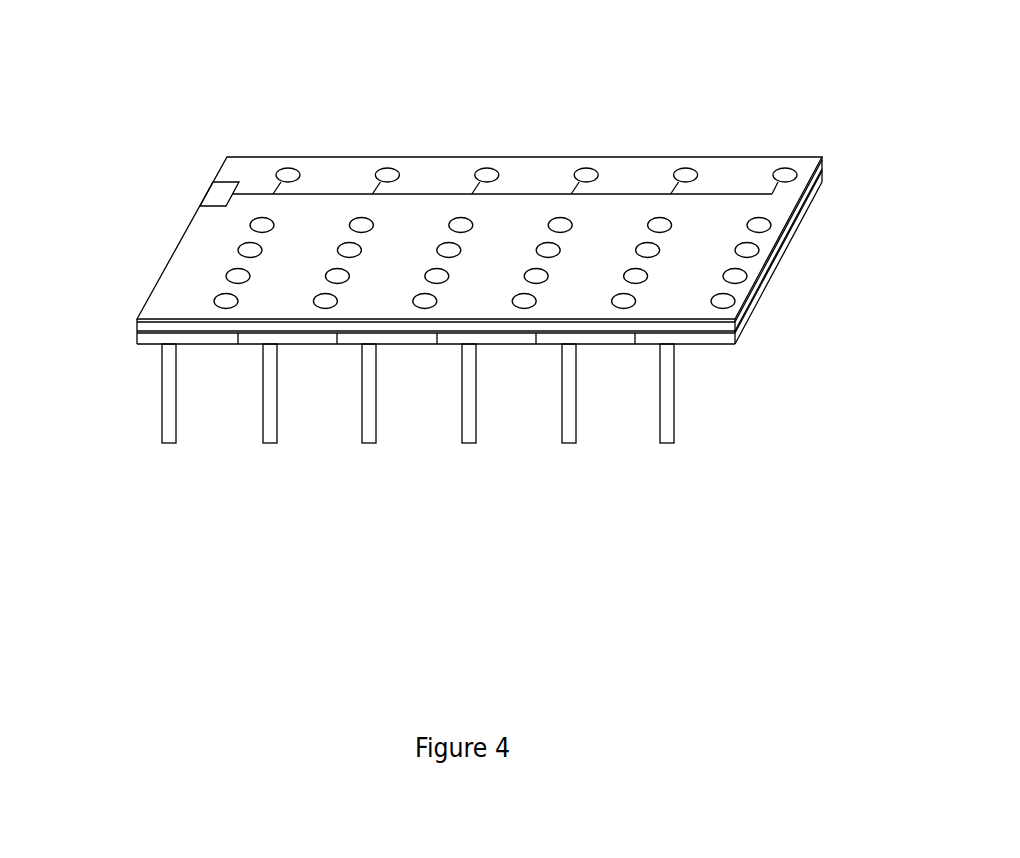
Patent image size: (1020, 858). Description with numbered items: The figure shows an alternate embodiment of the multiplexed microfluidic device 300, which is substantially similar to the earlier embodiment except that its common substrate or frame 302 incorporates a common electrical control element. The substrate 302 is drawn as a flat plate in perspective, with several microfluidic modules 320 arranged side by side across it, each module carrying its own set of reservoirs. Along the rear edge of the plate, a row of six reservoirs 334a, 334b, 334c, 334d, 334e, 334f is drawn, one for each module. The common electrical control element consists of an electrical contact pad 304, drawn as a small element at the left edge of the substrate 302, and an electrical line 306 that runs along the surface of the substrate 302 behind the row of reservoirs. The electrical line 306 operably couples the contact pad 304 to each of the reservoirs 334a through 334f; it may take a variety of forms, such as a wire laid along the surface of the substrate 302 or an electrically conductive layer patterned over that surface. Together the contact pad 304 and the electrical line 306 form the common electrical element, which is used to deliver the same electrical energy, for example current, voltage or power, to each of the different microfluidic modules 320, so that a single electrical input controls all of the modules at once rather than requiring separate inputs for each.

The device 300 is at (106, 99).
The common substrate or frame 302 is at (781, 207).
The electrical contact pad 304 is at (202, 194).
The electrical line 306 is at (437, 185).
The microfluidic modules 320 is at (715, 354).
The reservoir 334a is at (785, 158).
The reservoir 334b is at (686, 158).
The reservoir 334c is at (586, 158).
The reservoir 334d is at (487, 158).
The reservoir 334e is at (387, 158).
The reservoir 334f is at (288, 158).